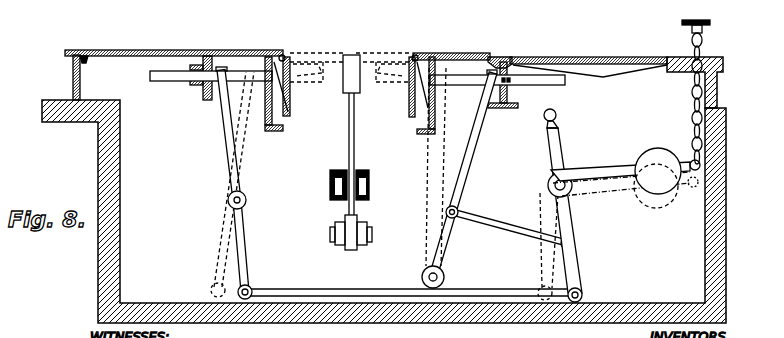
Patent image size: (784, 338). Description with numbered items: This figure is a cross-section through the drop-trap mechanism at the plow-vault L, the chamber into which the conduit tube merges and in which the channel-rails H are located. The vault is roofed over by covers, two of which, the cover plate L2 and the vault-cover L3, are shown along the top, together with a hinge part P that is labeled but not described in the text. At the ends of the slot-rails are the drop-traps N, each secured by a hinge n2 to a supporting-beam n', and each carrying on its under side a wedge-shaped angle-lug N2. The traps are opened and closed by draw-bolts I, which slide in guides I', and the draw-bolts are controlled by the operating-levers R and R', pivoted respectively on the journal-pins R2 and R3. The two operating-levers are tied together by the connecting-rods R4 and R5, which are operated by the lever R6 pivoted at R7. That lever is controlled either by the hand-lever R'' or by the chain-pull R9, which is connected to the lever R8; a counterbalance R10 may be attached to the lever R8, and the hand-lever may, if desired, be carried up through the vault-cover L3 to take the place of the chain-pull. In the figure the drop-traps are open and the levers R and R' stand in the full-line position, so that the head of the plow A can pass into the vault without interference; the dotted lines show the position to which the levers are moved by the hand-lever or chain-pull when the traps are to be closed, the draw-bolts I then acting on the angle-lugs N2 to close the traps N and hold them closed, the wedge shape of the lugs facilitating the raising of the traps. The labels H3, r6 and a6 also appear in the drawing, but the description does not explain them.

The plow-vault L is at (384, 190).
The cover plate L2 is at (474, 53).
The vault-cover L3 is at (588, 55).
The hinge P is at (82, 53).
The draw-bolt I is at (357, 89).
The guide I' is at (353, 98).
The drop-trap N is at (322, 62).
The angle-lug N2 is at (449, 100).
The hinge n2 is at (452, 12).
The supporting-beam n' is at (350, 105).
The plow A is at (349, 125).
The channel-rail H is at (330, 185).
The rod H3 is at (360, 172).
The lever R is at (229, 179).
The lever R' is at (464, 173).
The journal-pin R2 is at (246, 197).
The journal-pin R3 is at (444, 277).
The connecting-rod R4 is at (390, 282).
The connecting-rod R5 is at (506, 224).
The lever R6 is at (573, 215).
The pivot position r6 is at (547, 257).
The pivot R7 is at (554, 177).
The lever R8 is at (620, 170).
The chain-pull R9 is at (710, 92).
The counterbalance R10 is at (662, 150).
The hand-lever R'' is at (560, 116).
The plate a6 is at (575, 6).